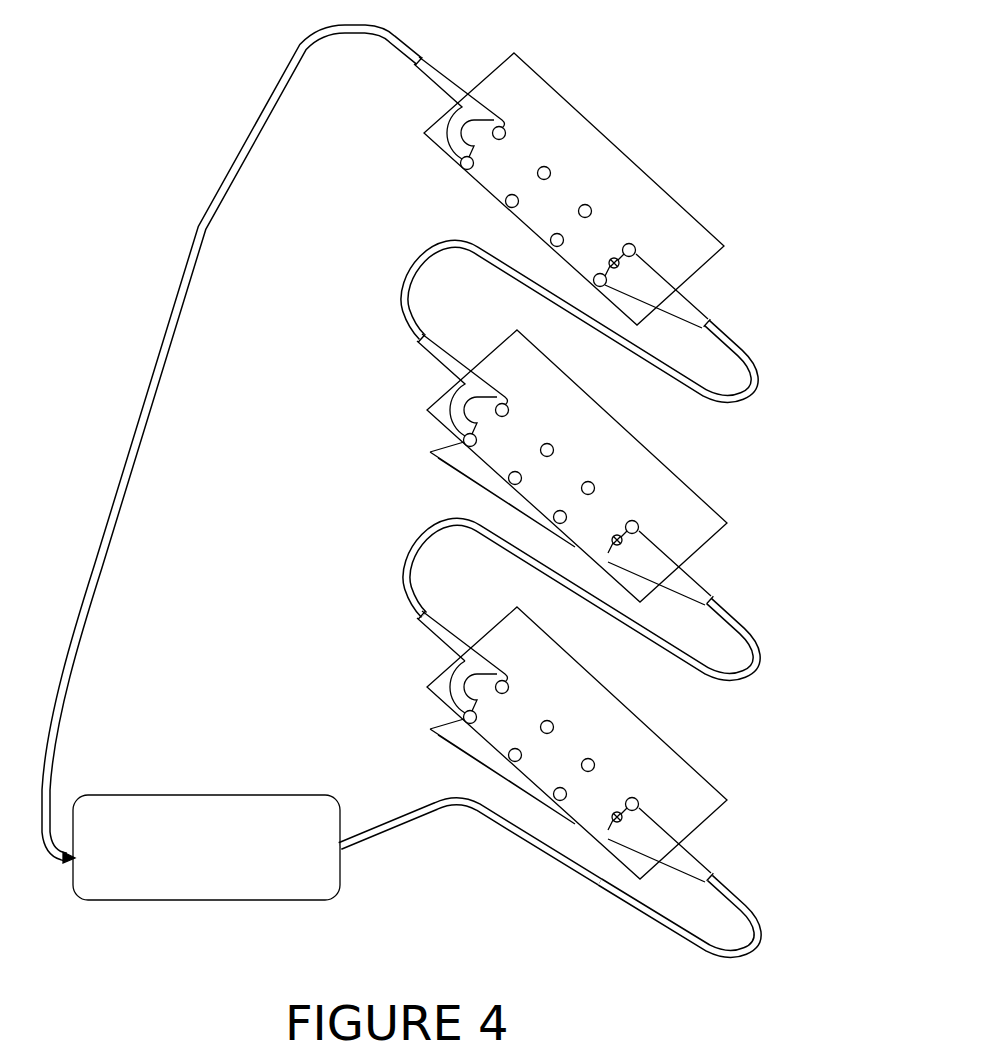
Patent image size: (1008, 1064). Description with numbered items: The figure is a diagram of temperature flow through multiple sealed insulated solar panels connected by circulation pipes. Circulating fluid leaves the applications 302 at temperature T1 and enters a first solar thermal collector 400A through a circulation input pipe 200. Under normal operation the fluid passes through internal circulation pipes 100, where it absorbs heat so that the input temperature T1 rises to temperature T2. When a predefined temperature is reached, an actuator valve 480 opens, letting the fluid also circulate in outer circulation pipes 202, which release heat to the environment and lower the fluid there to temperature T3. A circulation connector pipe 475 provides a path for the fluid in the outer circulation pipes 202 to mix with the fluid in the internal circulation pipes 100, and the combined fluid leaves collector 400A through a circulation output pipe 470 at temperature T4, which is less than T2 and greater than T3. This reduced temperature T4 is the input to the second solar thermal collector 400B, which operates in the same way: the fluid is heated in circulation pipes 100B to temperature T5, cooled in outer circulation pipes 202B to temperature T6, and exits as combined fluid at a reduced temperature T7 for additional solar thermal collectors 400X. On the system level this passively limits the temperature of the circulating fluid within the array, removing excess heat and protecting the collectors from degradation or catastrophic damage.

The circulation pipes 100 is at (651, 779).
The circulation pipes 100B is at (657, 500).
The circulation input pipe 200 is at (695, 845).
The outer circulation pipes 202 is at (484, 770).
The outer circulation pipes 202B is at (540, 532).
The applications 302 is at (206, 847).
The additional solar thermal collectors 400X is at (569, 190).
The solar thermal collector 400B is at (575, 476).
The solar thermal collector 400A is at (564, 744).
The circulation output pipe 470 is at (427, 646).
The circulation connector pipe 475 is at (427, 687).
The actuator valve 480 is at (569, 819).
The input temperature T1 is at (679, 916).
The increased temperature T2 is at (511, 699).
The decreased temperature T3 is at (484, 725).
The reduced temperature T4 is at (581, 599).
The increased temperature T5 is at (511, 421).
The decreased temperature T6 is at (484, 448).
The reduced temperature T7 is at (579, 321).